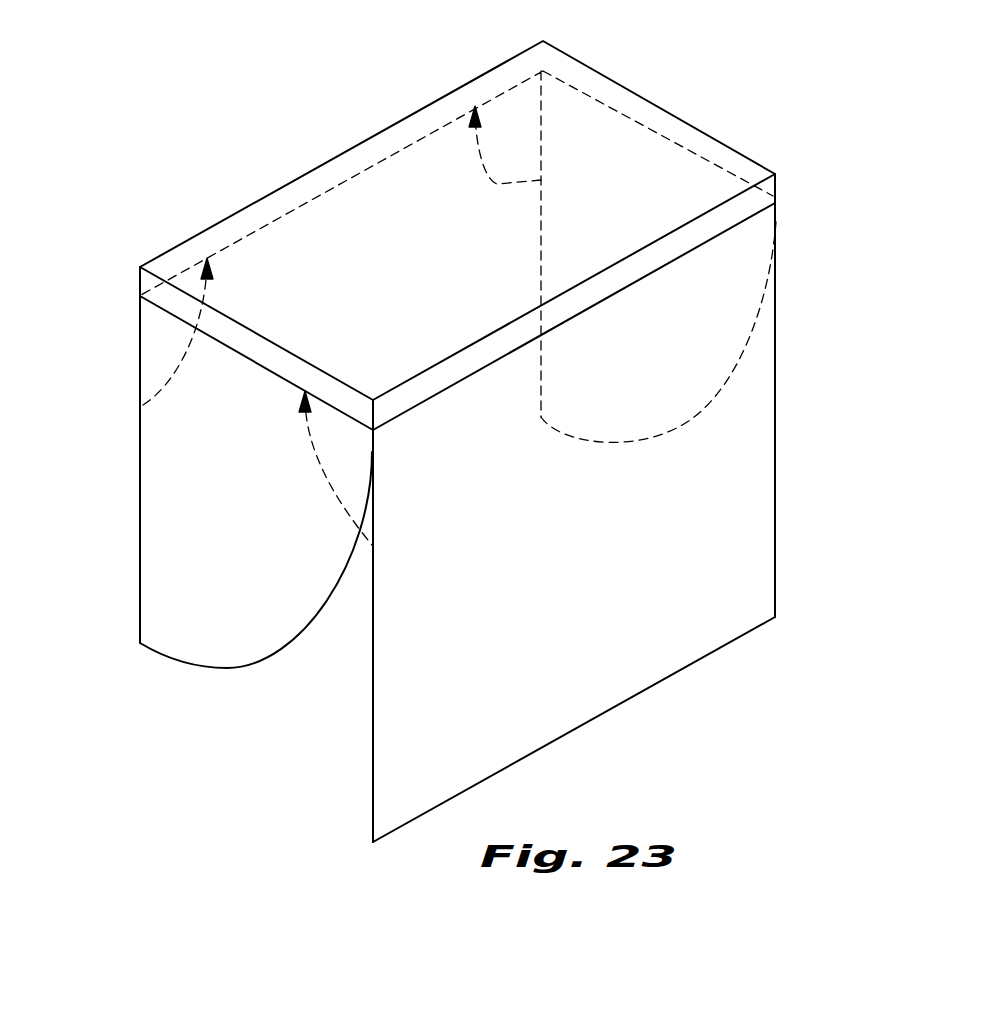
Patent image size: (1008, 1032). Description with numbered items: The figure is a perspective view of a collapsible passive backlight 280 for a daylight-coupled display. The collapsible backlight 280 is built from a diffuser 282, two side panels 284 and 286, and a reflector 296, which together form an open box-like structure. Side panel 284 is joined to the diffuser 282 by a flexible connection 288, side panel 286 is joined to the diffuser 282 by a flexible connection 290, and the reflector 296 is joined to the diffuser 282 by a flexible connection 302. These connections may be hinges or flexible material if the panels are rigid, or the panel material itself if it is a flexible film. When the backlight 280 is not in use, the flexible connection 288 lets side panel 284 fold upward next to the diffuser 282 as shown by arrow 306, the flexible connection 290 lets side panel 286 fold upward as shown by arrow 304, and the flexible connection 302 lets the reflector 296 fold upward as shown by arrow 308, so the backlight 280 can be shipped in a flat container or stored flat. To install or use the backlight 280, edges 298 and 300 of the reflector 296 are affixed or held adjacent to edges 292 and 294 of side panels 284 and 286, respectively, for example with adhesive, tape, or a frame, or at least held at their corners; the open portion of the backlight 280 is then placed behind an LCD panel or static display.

The collapsible passive backlight 280 is at (750, 67).
The diffuser 282 is at (657, 260).
The side panel 284 is at (602, 133).
The side panel 286 is at (155, 580).
The flexible connection 288 is at (680, 147).
The flexible connection 290 is at (252, 362).
The edge 292 is at (617, 443).
The edge 294 is at (252, 668).
The reflector 296 is at (758, 475).
The edge 298 is at (777, 373).
The edge 300 is at (372, 823).
The flexible connection 302 is at (448, 390).
The arrow 304 is at (175, 372).
The arrow 306 is at (497, 183).
The arrow 308 is at (320, 480).